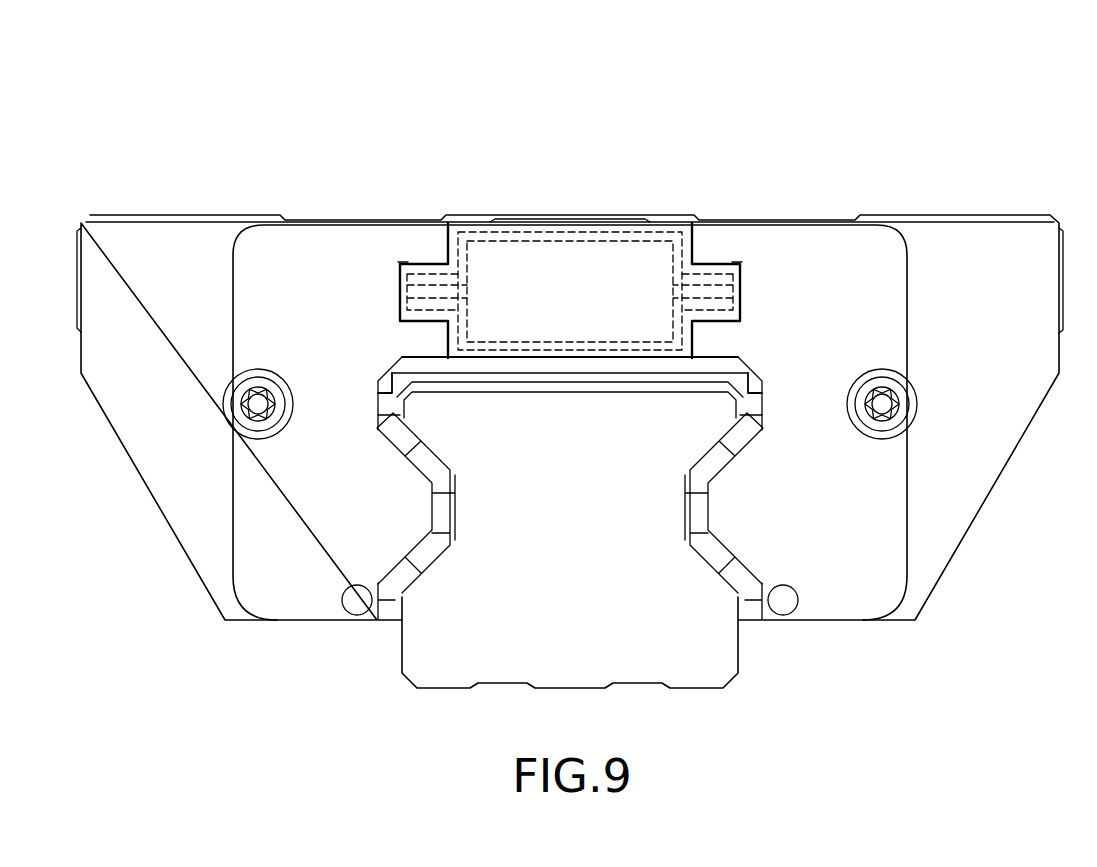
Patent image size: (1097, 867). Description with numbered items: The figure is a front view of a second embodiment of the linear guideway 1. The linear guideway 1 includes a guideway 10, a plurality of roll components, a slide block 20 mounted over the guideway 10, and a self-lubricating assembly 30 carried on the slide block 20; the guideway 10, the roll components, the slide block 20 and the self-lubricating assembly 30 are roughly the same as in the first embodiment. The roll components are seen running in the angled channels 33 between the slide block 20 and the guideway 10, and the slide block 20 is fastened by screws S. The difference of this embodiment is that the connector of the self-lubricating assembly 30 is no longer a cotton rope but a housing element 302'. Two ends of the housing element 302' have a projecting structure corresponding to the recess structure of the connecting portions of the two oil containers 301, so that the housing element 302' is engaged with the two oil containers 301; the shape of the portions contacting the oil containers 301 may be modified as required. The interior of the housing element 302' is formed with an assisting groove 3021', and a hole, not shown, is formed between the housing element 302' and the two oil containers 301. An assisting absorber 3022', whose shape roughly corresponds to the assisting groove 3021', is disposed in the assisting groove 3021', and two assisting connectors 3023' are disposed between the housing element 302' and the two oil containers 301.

The linear guideway 1 is at (84, 68).
The guideway 10 is at (388, 655).
The slide block 20 is at (929, 204).
The self-lubricating assembly 30 is at (442, 133).
The oil containers 301 is at (376, 250).
The housing element 302' is at (570, 301).
The assisting groove 3021' is at (570, 340).
The assisting absorber 3022' is at (570, 352).
The assisting connectors 3023' is at (639, 292).
The roller retaining channels 33 is at (413, 448).
The screw S is at (222, 404).